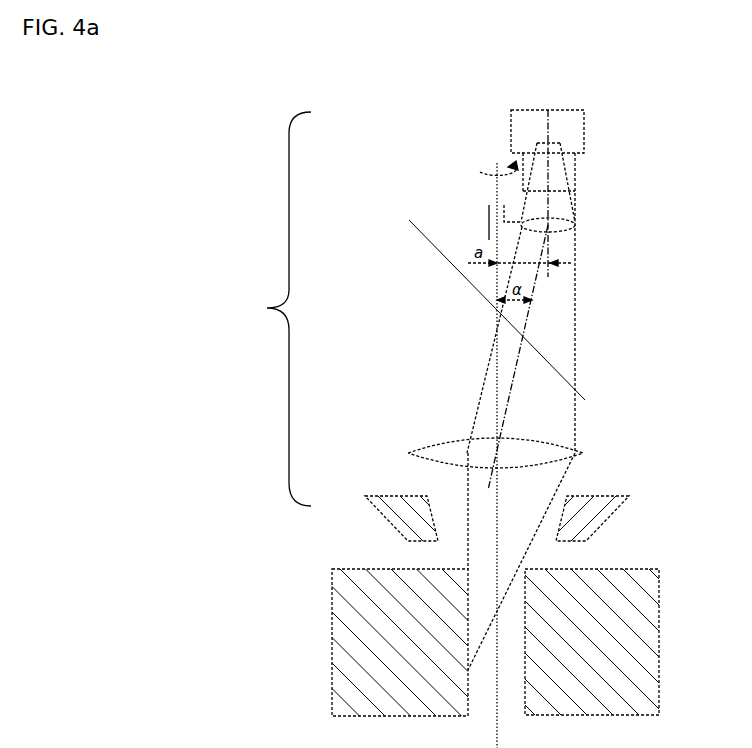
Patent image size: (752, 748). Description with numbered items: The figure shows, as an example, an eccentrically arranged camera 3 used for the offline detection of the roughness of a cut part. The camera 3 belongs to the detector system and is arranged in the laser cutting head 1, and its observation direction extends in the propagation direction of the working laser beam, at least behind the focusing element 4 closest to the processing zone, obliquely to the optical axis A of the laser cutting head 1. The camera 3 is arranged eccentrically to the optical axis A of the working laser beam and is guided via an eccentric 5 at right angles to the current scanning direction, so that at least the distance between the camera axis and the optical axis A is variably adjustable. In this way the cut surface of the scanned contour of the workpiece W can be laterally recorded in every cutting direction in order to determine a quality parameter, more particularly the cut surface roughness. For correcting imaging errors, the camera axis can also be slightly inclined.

The laser cutting head 1 is at (273, 309).
The camera 3 is at (568, 135).
The focusing element 4 is at (537, 453).
The eccentric 5 is at (512, 207).
The optical axis A is at (499, 512).
The workpiece W is at (379, 652).